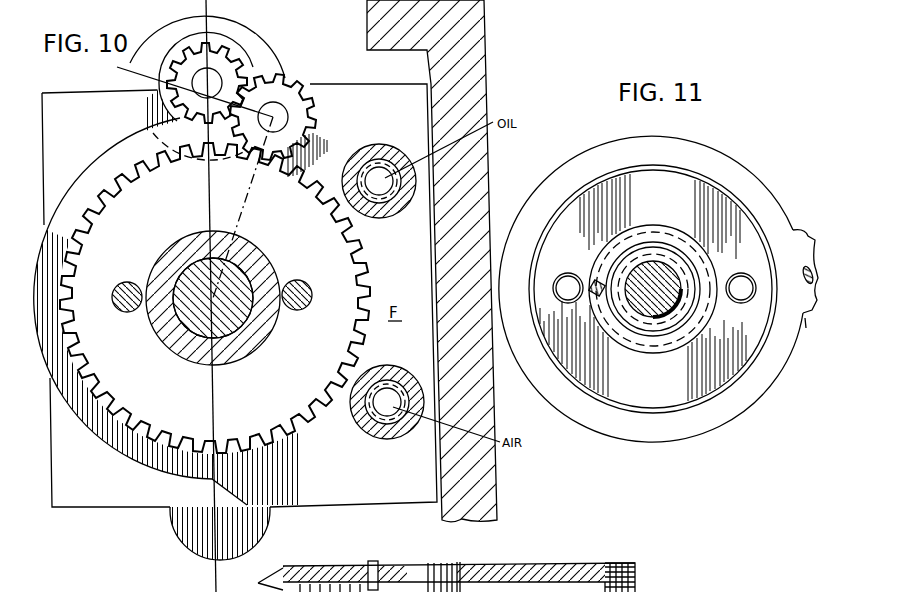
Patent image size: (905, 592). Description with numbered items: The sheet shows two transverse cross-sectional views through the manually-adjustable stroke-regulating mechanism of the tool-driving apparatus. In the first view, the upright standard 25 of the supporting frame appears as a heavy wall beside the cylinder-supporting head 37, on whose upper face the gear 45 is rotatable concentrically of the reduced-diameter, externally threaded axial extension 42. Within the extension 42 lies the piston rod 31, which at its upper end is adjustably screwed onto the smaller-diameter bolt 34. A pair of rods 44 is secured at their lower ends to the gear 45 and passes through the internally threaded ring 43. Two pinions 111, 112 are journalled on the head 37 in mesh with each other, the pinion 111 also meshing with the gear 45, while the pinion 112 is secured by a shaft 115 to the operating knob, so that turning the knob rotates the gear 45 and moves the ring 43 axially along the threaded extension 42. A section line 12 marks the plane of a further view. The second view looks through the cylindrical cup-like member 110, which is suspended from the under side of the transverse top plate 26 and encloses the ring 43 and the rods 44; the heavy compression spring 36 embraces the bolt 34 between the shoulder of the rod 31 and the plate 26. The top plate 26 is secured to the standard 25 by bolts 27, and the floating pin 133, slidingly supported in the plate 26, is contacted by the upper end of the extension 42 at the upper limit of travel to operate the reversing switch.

In FIG. 10, the section line 12- 12 is at (222, 17).
In FIG. 10, the shaft 115 is at (180, 89).
In FIG. 10, the pinion 112 is at (225, 72).
In FIG. 10, the pinion 111 is at (289, 116).
In FIG. 10, the piston rod 31 is at (245, 300).
In FIG. 10, the axial extension 42 is at (252, 342).
In FIG. 10, the rods 44 is at (125, 281).
In FIG. 11, the rods 44 is at (568, 279).
In FIG. 10, the gear 45 is at (283, 420).
In FIG. 10, the upright standard 25 is at (477, 201).
In FIG. 10, the cylinder-supporting head 37 is at (365, 483).
In FIG. 10, the floating pin 133 is at (368, 565).
In FIG. 11, the floating pin 133 is at (595, 282).
In FIG. 10, the bolt 34 is at (453, 563).
In FIG. 11, the bolt 34 is at (655, 288).
In FIG. 10, the top plate 26 is at (565, 570).
In FIG. 10, the bolts 27 is at (633, 576).
In FIG. 11, the bolts 27 is at (806, 311).
In FIG. 11, the compression spring 36 is at (693, 280).
In FIG. 11, the ring 43 is at (673, 393).
In FIG. 11, the cup-like member 110 is at (770, 372).